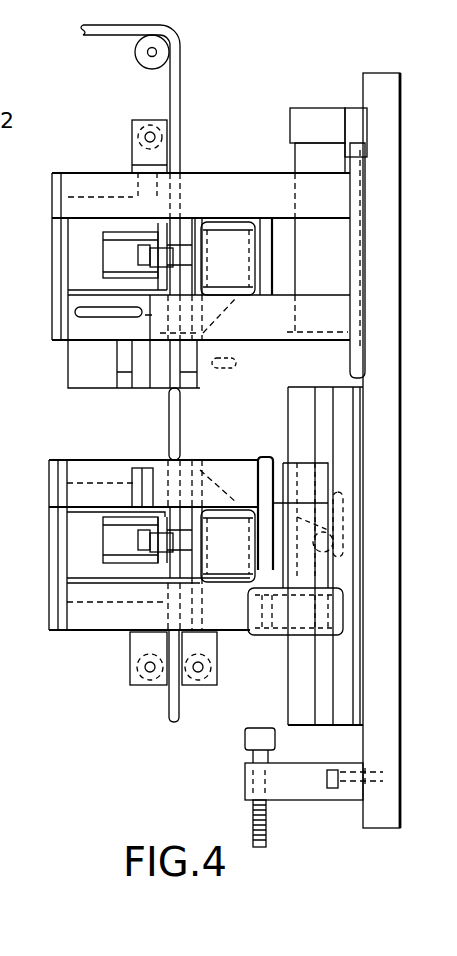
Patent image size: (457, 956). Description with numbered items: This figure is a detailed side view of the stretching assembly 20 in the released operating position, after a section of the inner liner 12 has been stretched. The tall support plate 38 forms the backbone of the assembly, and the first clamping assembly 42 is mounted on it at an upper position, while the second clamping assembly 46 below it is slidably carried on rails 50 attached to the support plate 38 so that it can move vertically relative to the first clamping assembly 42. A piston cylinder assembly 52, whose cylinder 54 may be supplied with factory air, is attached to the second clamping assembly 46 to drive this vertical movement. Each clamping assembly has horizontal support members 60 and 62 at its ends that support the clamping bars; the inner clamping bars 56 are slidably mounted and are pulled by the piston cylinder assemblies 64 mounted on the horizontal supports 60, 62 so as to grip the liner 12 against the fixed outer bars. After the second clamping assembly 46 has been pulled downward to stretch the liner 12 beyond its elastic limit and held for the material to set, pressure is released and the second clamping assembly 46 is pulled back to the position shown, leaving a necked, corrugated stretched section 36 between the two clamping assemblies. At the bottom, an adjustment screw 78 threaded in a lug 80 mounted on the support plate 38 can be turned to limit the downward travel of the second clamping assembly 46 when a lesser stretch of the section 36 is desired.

The inner liner 12 is at (170, 90).
The stretching assembly 20 is at (303, 78).
The stretched section 36 is at (168, 420).
The support plate 38 is at (390, 78).
The first clamping assembly 42 is at (360, 190).
The second clamping assembly 46 is at (345, 617).
The rails 50 is at (345, 675).
The piston cylinder assembly 52 is at (290, 125).
The cylinder 54 is at (295, 158).
The inner clamping bars 56 is at (110, 245).
The horizontal support member 60 is at (95, 178).
The horizontal support member 62 is at (263, 330).
The piston cylinder assemblies 64 is at (237, 240).
The adjustment screw 78 is at (245, 740).
The lug 80 is at (305, 797).